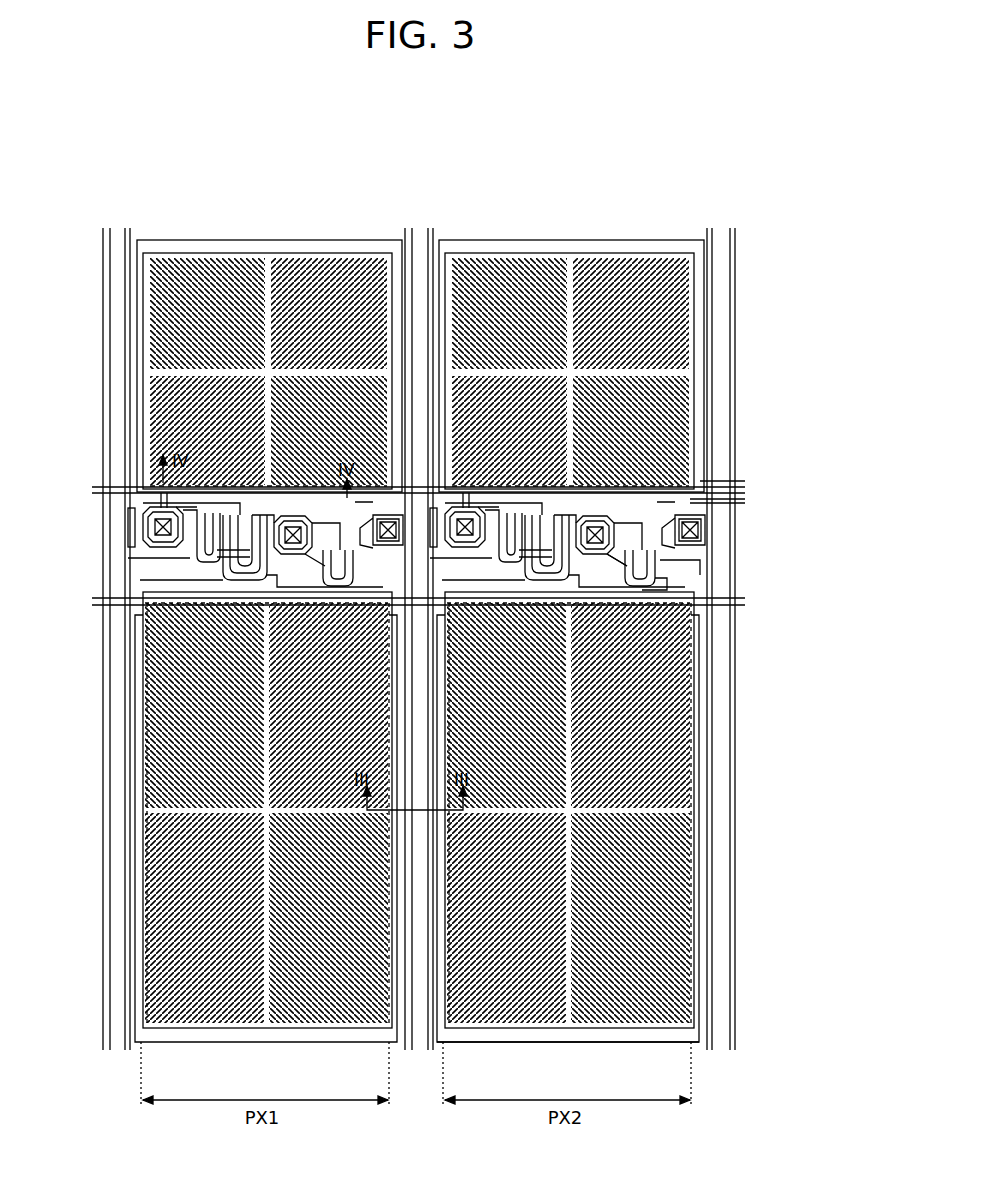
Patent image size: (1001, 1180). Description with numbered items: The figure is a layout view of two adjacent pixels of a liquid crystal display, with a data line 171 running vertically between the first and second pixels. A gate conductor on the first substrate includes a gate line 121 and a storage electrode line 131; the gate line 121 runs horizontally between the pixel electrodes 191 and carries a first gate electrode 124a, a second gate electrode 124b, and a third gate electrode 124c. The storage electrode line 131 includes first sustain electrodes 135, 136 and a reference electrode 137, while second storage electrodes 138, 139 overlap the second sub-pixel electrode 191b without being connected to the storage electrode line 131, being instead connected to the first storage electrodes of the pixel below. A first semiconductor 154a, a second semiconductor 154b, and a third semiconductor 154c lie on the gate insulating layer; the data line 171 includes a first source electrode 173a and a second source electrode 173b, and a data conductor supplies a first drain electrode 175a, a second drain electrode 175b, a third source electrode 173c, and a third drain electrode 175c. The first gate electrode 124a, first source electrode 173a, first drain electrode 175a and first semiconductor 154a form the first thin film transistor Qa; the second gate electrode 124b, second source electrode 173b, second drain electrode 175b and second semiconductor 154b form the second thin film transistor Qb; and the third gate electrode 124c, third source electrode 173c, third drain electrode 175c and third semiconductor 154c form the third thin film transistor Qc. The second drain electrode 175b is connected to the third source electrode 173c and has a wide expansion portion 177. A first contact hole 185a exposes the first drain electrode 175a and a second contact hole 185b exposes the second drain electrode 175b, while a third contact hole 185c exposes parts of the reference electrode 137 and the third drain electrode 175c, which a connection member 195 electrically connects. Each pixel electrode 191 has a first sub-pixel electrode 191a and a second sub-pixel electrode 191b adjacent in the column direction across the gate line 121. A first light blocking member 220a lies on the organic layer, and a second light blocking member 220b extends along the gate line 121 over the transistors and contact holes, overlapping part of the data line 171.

The data line 171 is at (103, 277).
The first sustain electrode 135 is at (712, 295).
The first light blocking member 220a is at (736, 254).
The second light blocking member 220b is at (738, 470).
The storage electrode line 131 is at (716, 487).
The gate line 121 is at (736, 583).
The reference electrode 137 is at (712, 502).
The first sustain electrode 136 is at (213, 240).
The pixel electrode 191 is at (91, 1146).
The first sub-pixel electrode 191a is at (143, 313).
The second sub-pixel electrode 191b is at (143, 740).
The second storage electrode 138 is at (702, 869).
The second storage electrode 139 is at (607, 1044).
The first gate electrode 124a is at (163, 507).
The second gate electrode 124b is at (270, 515).
The third gate electrode 124c is at (320, 600).
The first semiconductor 154a is at (208, 513).
The second semiconductor 154b is at (245, 515).
The third semiconductor 154c is at (636, 592).
The first source electrode 173a is at (130, 560).
The second source electrode 173b is at (280, 590).
The third source electrode 173c is at (706, 530).
The first drain electrode 175a is at (128, 512).
The second drain electrode 175b is at (245, 582).
The third drain electrode 175c is at (660, 588).
The first contact hole 185a is at (155, 528).
The second contact hole 185b is at (600, 520).
The third contact hole 185c is at (700, 548).
The expansion portion 177 is at (618, 545).
The connection member 195 is at (702, 560).
The first thin film transistor Qa is at (515, 565).
The second thin film transistor Qb is at (547, 582).
The third thin film transistor Qc is at (642, 592).